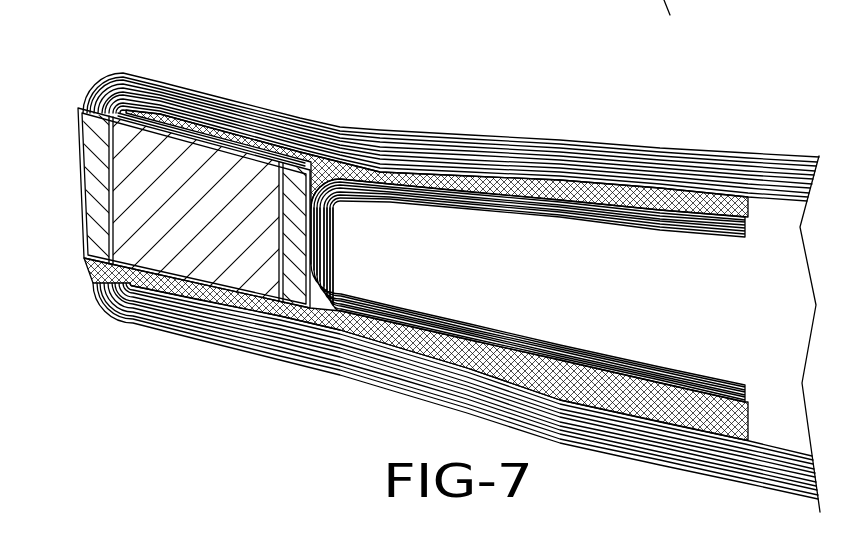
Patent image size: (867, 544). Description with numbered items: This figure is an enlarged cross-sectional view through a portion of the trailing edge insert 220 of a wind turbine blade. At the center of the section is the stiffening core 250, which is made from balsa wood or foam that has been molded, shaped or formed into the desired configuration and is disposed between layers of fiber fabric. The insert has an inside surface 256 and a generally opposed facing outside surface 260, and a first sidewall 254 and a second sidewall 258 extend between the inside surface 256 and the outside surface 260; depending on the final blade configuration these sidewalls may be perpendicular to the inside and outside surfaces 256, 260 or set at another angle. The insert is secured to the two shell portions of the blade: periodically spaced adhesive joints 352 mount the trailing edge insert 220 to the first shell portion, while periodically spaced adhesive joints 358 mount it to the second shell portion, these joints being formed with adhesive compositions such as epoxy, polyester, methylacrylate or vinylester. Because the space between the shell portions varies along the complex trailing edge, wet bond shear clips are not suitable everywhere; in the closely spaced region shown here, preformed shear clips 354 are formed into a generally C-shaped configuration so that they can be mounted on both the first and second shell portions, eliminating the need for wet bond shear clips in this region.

The trailing edge insert 220 is at (168, 128).
The stiffening core 250 is at (217, 233).
The first sidewall 254 is at (160, 270).
The inside surface 256 is at (311, 249).
The second sidewall 258 is at (220, 152).
The outside surface 260 is at (85, 225).
The adhesive joints 352 is at (150, 122).
The preformed shear clips 354 is at (610, 228).
The adhesive joints 358 is at (258, 305).